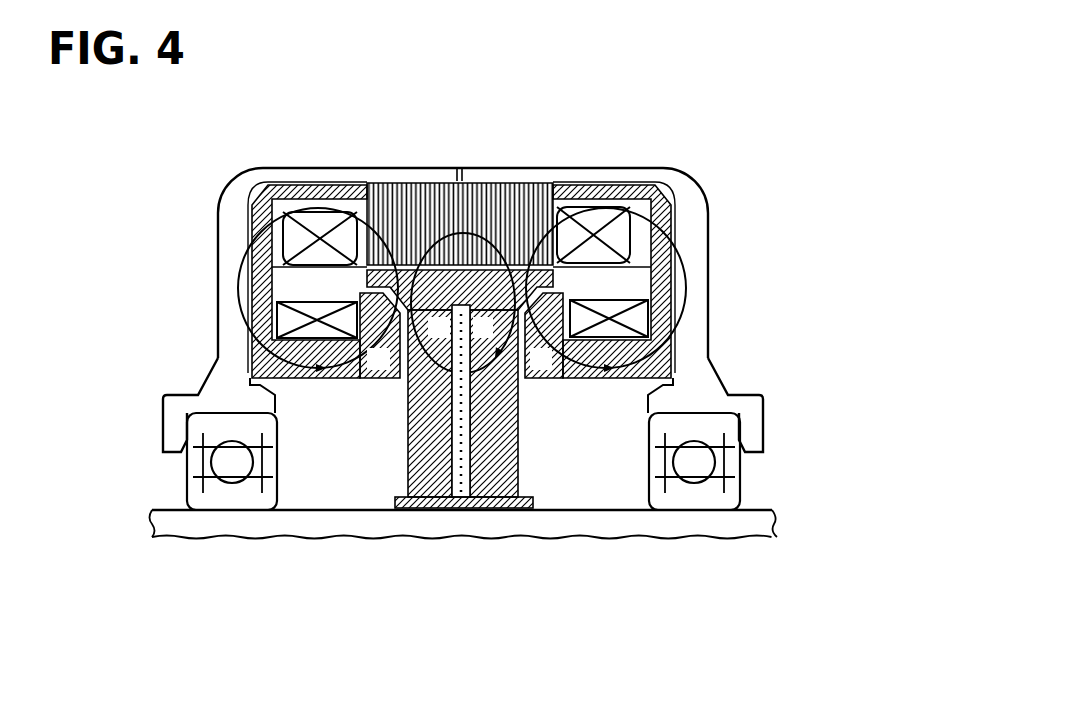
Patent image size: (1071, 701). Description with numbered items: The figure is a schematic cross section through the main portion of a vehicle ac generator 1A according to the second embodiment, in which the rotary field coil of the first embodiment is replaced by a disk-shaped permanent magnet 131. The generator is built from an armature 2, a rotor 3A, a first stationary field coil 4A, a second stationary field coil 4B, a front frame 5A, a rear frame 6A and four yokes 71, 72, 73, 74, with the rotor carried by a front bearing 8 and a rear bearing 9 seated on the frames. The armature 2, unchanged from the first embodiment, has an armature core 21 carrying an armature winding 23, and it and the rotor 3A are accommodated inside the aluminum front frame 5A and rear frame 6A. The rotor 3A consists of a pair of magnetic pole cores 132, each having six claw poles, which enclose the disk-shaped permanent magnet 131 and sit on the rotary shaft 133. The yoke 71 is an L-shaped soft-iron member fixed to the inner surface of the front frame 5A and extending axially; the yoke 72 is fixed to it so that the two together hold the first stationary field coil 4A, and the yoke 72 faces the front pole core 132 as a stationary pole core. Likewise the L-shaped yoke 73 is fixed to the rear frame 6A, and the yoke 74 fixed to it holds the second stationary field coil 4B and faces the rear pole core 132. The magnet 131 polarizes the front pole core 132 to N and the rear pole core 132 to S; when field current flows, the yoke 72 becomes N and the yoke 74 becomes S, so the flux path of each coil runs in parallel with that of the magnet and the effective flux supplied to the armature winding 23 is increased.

The ac generator 1A is at (683, 161).
The armature 2 is at (492, 179).
The armature core 21 is at (425, 195).
The armature winding 23 is at (330, 212).
The rotor 3A is at (542, 442).
The first stationary field coil 4A is at (312, 306).
The second stationary field coil 4B is at (620, 297).
The front frame 5A is at (232, 320).
The rear frame 6A is at (696, 315).
The yoke 71 is at (250, 360).
The yoke 72 is at (370, 378).
The yoke 73 is at (676, 360).
The yoke 74 is at (560, 378).
The front bearing 8 is at (210, 496).
The rear bearing 9 is at (707, 492).
The disk-shaped permanent magnet 131 is at (463, 508).
The magnetic pole core 132 is at (393, 503).
The rotary shaft 133 is at (216, 537).